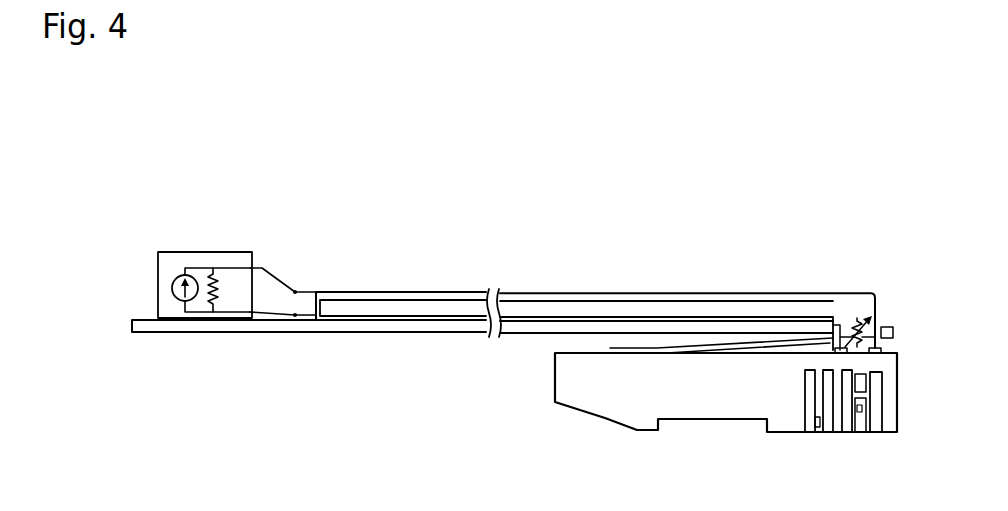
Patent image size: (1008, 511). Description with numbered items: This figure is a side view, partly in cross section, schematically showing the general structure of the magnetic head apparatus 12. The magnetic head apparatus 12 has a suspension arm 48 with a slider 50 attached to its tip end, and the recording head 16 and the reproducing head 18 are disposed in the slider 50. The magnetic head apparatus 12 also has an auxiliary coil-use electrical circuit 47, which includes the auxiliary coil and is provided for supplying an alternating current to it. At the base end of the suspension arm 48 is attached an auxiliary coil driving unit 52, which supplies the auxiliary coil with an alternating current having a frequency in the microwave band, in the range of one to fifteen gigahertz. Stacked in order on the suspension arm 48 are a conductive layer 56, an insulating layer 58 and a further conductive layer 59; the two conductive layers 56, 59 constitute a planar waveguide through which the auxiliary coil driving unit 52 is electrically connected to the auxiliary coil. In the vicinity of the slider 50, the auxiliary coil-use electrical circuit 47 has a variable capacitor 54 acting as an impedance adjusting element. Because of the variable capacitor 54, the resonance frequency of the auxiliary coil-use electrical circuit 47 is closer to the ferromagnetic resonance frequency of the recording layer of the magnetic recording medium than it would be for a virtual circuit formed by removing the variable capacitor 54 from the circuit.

The magnetic head apparatus 12 is at (524, 187).
The auxiliary coil-use electrical circuit 47 is at (617, 251).
The suspension arm 48 is at (573, 326).
The slider 50 is at (553, 378).
The auxiliary coil driving unit 52 is at (207, 251).
The variable capacitor 54 is at (858, 316).
The conductive layer 56 is at (374, 321).
The insulating layer 58 is at (409, 309).
The conductive layer 59 is at (368, 291).
The recording head 16 is at (866, 436).
The reproducing head 18 is at (817, 436).